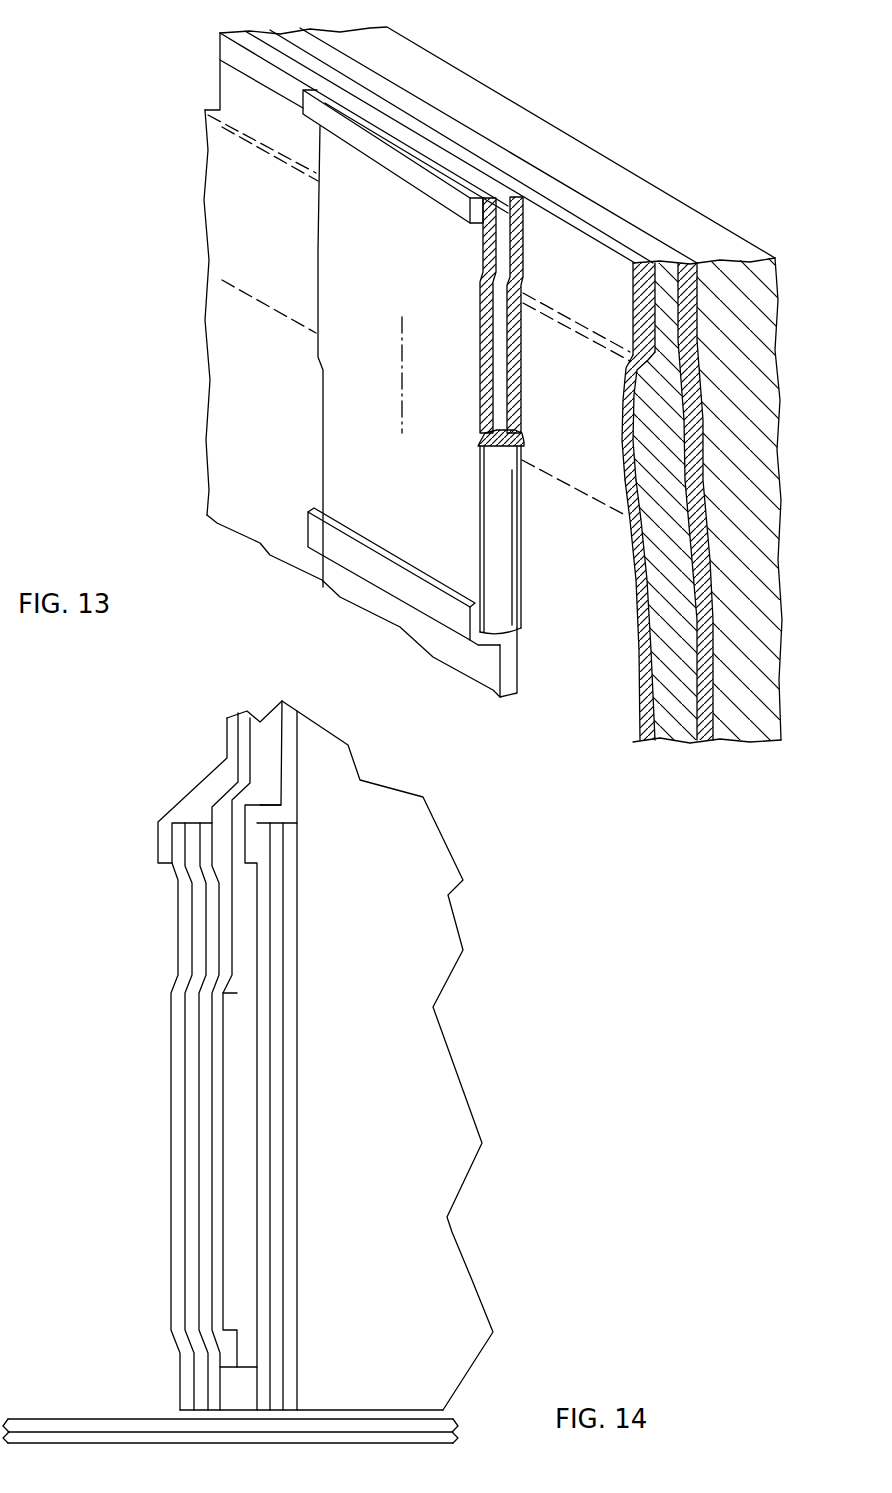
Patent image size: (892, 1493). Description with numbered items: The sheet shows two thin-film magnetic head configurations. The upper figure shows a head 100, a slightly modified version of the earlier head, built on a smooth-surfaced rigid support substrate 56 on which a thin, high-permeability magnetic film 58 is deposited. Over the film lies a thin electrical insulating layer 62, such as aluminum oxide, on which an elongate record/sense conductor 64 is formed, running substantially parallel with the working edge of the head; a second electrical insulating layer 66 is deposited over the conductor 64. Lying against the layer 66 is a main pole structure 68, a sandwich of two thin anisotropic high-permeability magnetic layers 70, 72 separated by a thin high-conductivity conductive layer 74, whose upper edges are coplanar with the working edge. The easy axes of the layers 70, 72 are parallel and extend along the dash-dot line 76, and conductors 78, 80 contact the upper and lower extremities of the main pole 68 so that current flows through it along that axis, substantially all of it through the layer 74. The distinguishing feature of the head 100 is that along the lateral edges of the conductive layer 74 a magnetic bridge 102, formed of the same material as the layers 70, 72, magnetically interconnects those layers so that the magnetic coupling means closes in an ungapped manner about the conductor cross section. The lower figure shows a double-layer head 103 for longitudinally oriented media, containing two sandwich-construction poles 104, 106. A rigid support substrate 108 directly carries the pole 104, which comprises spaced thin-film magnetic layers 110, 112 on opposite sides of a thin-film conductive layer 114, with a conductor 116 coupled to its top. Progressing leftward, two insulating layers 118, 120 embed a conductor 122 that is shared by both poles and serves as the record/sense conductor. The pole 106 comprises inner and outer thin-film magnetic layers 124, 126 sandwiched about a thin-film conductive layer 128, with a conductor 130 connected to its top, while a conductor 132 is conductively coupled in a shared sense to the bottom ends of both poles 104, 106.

In FIG. 13, the head 100 is at (597, 131).
In FIG. 13, the rigid support substrate 56 is at (652, 197).
In FIG. 13, the magnetic film 58 is at (665, 253).
In FIG. 13, the electrical insulating layer 62 is at (645, 297).
In FIG. 13, the elongate conductor 64 is at (630, 478).
In FIG. 13, the second electrical insulating layer 66 is at (623, 403).
In FIG. 13, the main pole structure 68 is at (330, 262).
In FIG. 13, the magnetic layer 70 is at (520, 247).
In FIG. 13, the magnetic layer 72 is at (492, 256).
In FIG. 13, the conductive layer 74 is at (488, 310).
In FIG. 13, the dash-dot line 76 is at (400, 371).
In FIG. 13, the conductor 78 is at (398, 167).
In FIG. 13, the conductor 80 is at (372, 558).
In FIG. 13, the magnetic bridge 102 is at (503, 579).
In FIG. 14, the head 103 is at (509, 876).
In FIG. 14, the pole 104 is at (331, 886).
In FIG. 14, the pole 106 is at (142, 868).
In FIG. 14, the rigid support substrate 108 is at (433, 1037).
In FIG. 14, the thin-film magnetic layer 110 is at (287, 967).
In FIG. 14, the thin-film magnetic layer 112 is at (263, 930).
In FIG. 14, the thin-film conductive layer 114 is at (283, 1002).
In FIG. 14, the conductor 116 is at (287, 808).
In FIG. 14, the insulating layer 118 is at (275, 742).
In FIG. 14, the insulating layer 120 is at (245, 713).
In FIG. 14, the conductor 122 is at (227, 1133).
In FIG. 14, the inner thin-film magnetic layer 124 is at (216, 907).
In FIG. 14, the outer thin-film magnetic layer 126 is at (184, 943).
In FIG. 14, the thin-film conductive layer 128 is at (204, 967).
In FIG. 14, the conductor 130 is at (164, 843).
In FIG. 14, the conductor 132 is at (228, 1383).